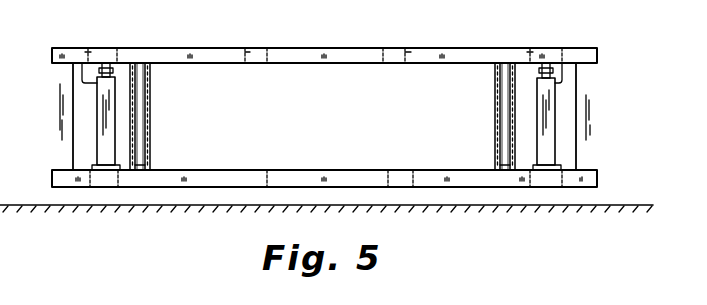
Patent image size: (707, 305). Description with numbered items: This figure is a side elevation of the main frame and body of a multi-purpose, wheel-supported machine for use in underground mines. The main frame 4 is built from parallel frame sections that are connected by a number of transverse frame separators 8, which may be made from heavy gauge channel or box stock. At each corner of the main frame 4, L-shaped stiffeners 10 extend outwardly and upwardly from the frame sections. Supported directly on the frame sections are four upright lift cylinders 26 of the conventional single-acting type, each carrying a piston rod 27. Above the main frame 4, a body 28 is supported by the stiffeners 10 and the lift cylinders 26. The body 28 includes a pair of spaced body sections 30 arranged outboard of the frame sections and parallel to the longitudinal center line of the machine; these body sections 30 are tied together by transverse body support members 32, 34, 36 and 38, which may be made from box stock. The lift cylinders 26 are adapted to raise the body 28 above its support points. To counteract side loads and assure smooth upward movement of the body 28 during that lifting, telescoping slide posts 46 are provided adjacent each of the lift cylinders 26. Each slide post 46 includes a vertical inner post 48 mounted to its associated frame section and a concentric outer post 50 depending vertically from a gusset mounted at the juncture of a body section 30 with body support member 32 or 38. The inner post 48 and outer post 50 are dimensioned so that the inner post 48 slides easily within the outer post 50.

The main frame 4 is at (600, 180).
The transverse frame separators 8 is at (124, 190).
The L-shaped stiffeners 10 is at (58, 115).
The lift cylinders 26 is at (82, 48).
The piston rods 27 is at (113, 72).
The body 28 is at (355, 48).
The body sections 30 is at (290, 47).
The transverse body support member 32 is at (87, 47).
The transverse body support member 34 is at (240, 50).
The transverse body support member 36 is at (407, 50).
The transverse body support member 38 is at (530, 50).
The telescoping slide posts 46 is at (153, 92).
The inner post 48 is at (147, 168).
The outer post 50 is at (152, 112).